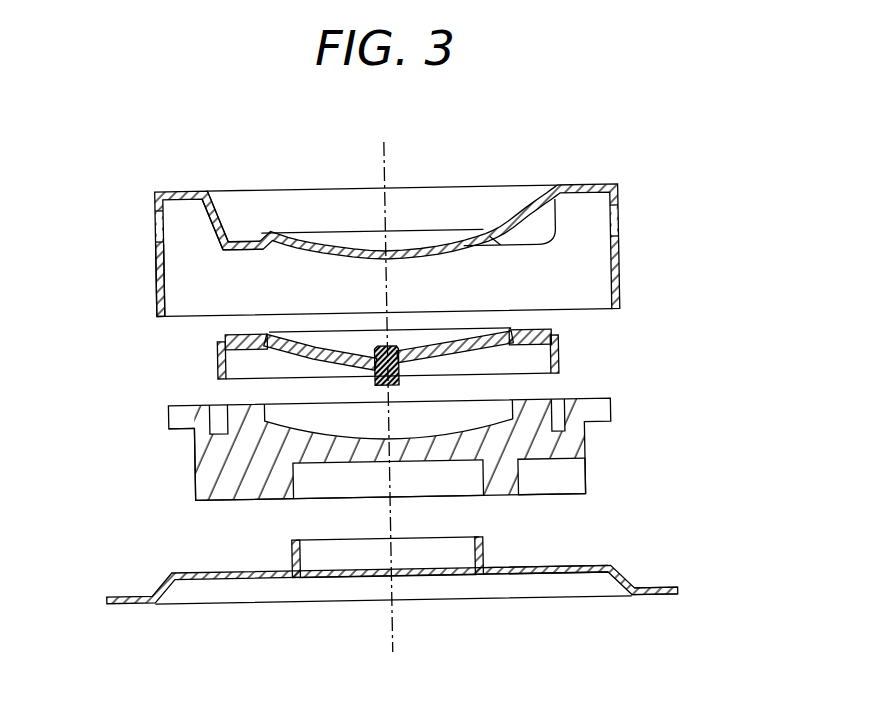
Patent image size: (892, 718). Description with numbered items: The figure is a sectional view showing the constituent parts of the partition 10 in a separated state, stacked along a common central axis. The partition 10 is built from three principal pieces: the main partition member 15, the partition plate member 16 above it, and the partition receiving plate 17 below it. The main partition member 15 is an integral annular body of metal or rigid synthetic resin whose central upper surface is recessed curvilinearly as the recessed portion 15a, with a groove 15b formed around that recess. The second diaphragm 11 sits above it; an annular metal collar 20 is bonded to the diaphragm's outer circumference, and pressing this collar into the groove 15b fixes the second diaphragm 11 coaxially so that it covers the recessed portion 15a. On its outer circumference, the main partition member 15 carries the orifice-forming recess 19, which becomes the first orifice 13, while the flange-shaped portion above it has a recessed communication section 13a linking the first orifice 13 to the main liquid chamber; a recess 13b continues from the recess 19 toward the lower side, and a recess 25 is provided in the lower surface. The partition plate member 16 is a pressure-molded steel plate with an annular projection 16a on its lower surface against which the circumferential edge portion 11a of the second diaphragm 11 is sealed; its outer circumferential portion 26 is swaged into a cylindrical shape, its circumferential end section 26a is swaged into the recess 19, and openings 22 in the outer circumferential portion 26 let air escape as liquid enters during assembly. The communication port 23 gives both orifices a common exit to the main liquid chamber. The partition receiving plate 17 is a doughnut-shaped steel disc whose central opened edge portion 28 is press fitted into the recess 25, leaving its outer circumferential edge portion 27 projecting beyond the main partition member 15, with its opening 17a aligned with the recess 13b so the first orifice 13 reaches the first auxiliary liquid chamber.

The partition 10 is at (413, 385).
The second diaphragm 11 is at (395, 339).
The circumferential edge portion of the second diaphragm 11a is at (541, 332).
The first orifice 13 is at (188, 464).
The recessed communication section 13a is at (177, 414).
The recess 13b is at (563, 486).
The main partition member 15 is at (397, 511).
The recessed portion 15a is at (316, 418).
The groove 15b is at (563, 401).
The partition plate member 16 is at (378, 224).
The annular projection 16a is at (229, 245).
The partition receiving plate 17 is at (449, 612).
The opening 17a is at (544, 578).
The orifice-forming recess 19 is at (167, 479).
The metal collar 20 is at (218, 362).
The opening 22 is at (161, 218).
The communication port 23 is at (238, 195).
The recess 25 is at (453, 464).
The outer circumferential portion 26 is at (160, 264).
The circumferential end section 26a is at (156, 311).
The outer circumferential edge portion 27 is at (653, 596).
The opened edge portion 28 is at (300, 546).